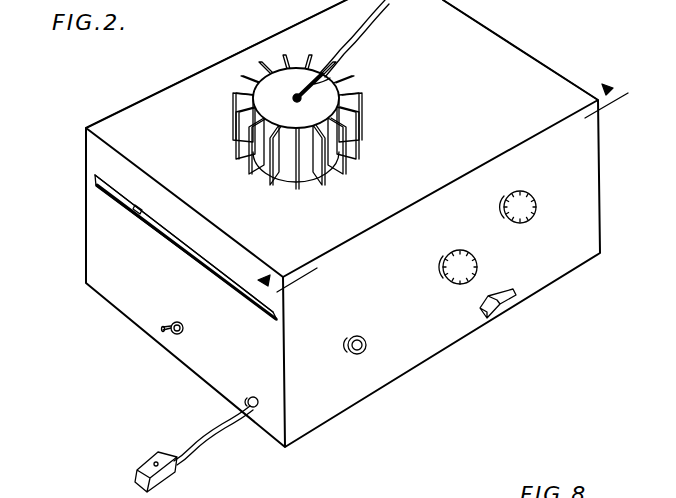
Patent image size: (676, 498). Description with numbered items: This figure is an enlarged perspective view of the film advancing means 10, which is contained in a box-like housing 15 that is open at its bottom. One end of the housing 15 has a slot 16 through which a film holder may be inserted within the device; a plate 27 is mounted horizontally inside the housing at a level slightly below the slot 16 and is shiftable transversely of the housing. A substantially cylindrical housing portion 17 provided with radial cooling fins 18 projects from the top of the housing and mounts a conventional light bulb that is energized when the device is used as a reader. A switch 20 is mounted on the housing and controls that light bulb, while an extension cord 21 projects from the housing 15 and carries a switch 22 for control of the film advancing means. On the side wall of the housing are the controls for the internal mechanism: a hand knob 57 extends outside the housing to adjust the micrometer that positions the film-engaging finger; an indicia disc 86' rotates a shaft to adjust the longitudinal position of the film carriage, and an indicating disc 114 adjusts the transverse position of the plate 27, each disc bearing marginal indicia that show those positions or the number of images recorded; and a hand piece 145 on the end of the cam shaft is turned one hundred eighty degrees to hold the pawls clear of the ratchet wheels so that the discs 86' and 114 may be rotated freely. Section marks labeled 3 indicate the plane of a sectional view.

The film advancing means 10 is at (74, 226).
The housing 15 is at (530, 72).
The section line 3- 3 is at (449, 194).
The slot 16 is at (252, 304).
The plate 27 is at (180, 244).
The cylindrical housing portion 17 is at (327, 84).
The radial cooling fins 18 is at (347, 98).
The indicia disc 86' is at (536, 207).
The indicating disc 114 is at (453, 280).
The hand piece 145 is at (496, 296).
The hand knob 57 is at (364, 351).
The switch 20 is at (179, 318).
The extension cord 21 is at (224, 424).
The switch 22 is at (165, 475).